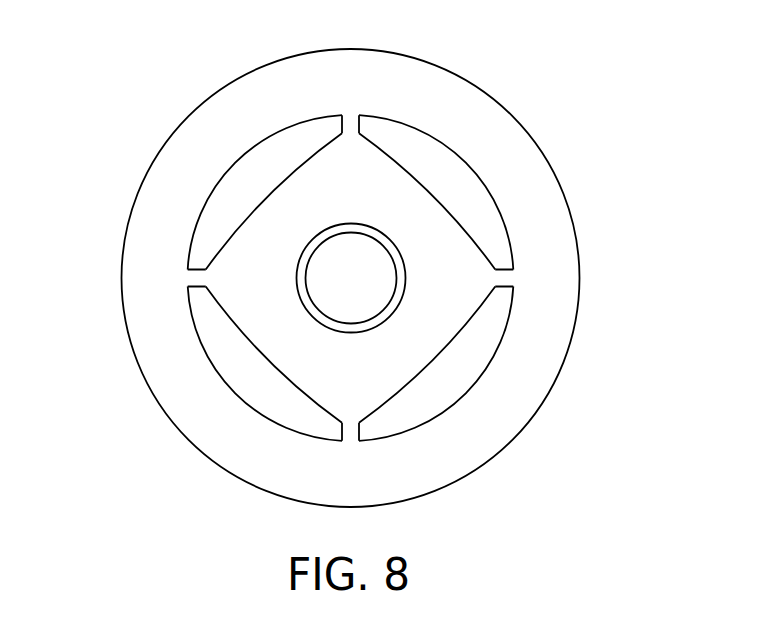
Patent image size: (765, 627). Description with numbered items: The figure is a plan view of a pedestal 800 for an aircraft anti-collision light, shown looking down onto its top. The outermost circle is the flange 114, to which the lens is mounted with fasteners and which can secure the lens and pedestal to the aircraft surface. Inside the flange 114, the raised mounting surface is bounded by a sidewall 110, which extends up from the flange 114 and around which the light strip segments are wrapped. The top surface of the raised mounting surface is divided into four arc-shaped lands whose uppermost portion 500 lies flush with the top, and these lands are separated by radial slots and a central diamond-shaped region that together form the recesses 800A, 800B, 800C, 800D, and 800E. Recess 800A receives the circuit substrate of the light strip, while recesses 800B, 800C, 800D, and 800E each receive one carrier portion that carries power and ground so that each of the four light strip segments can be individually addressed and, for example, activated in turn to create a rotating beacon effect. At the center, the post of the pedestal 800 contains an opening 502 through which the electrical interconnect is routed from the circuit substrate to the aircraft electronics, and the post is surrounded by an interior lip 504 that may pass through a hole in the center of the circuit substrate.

The pedestal 800 is at (537, 80).
The recess 800A is at (285, 200).
The recess 800B is at (350, 122).
The recess 800C is at (507, 277).
The recess 800D is at (351, 437).
The recess 800E is at (193, 277).
The flange 114 is at (522, 148).
The sidewall 110 is at (195, 218).
The uppermost portion 500 is at (218, 357).
The opening 502 is at (380, 294).
The interior lip 504 is at (367, 328).